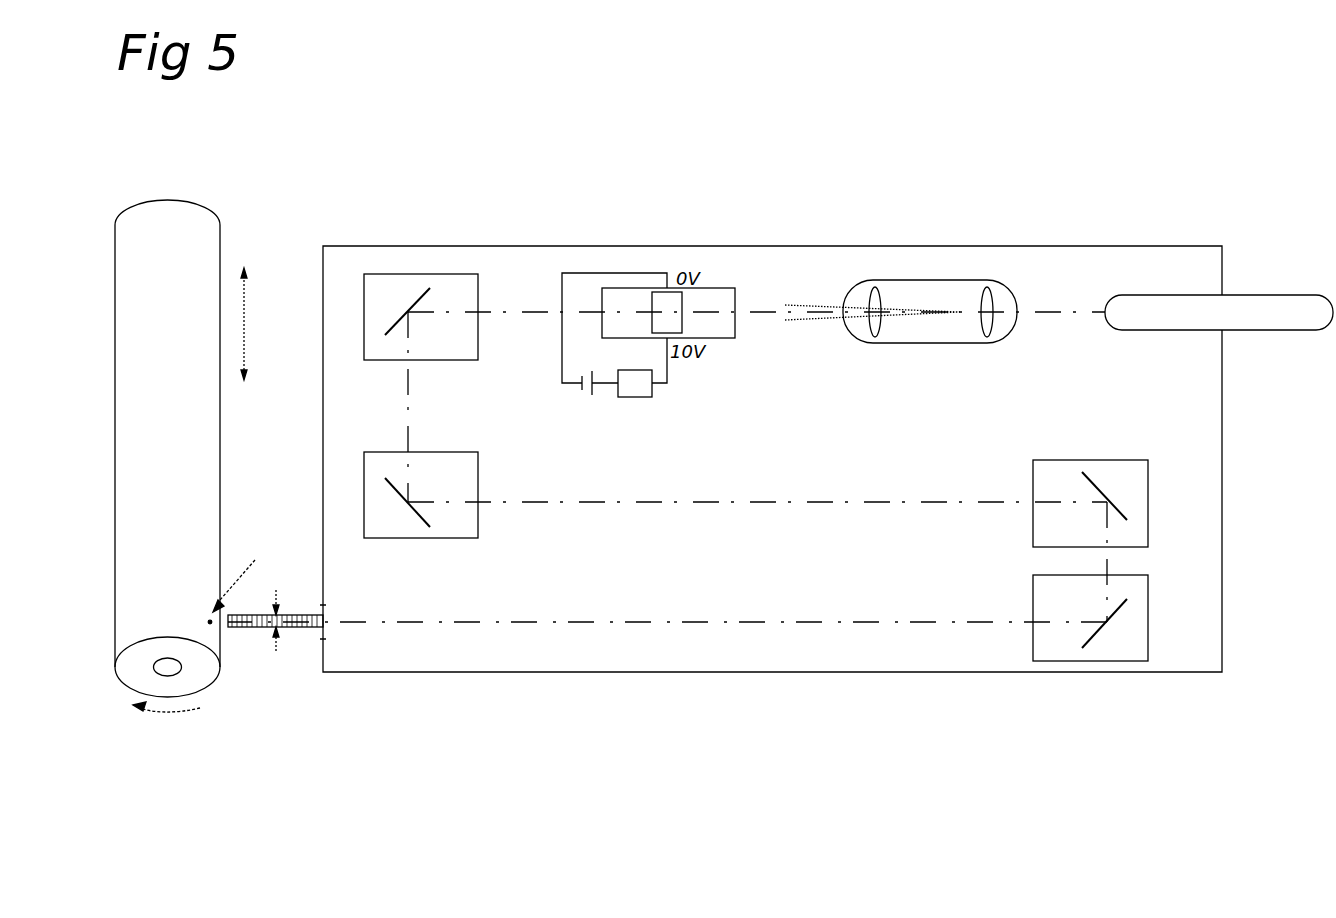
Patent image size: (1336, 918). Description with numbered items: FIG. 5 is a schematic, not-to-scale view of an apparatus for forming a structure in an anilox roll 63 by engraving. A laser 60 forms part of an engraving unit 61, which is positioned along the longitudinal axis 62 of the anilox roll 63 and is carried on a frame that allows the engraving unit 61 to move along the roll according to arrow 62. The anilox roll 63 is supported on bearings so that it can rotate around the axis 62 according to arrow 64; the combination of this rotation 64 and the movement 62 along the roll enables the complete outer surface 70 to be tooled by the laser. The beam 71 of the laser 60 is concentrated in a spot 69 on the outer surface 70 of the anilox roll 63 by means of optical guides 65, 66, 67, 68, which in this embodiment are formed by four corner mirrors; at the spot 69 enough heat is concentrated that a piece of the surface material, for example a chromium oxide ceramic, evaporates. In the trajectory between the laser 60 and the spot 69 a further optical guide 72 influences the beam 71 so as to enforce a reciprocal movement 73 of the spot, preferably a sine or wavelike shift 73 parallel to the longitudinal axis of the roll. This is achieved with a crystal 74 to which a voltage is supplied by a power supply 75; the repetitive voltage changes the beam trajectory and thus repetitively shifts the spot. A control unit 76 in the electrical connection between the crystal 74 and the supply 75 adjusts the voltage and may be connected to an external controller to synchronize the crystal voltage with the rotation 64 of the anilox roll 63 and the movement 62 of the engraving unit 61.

The laser 60 is at (1280, 308).
The engraving unit 61 is at (1148, 388).
The longitudinal axis 62 is at (247, 328).
The anilox roll 63 is at (178, 218).
The rotation arrow 64 is at (170, 712).
The optical guide 65 is at (457, 284).
The optical guide 66 is at (456, 476).
The optical guide 67 is at (1135, 483).
The optical guide 68 is at (1140, 601).
The spot 69 is at (243, 582).
The outer surface 70 is at (192, 436).
The beam 71 is at (1047, 305).
The optical guide 72 is at (723, 296).
The reciprocal movement 73 is at (278, 648).
The crystal 74 is at (686, 324).
The power supply 75 is at (585, 395).
The control unit 76 is at (634, 397).